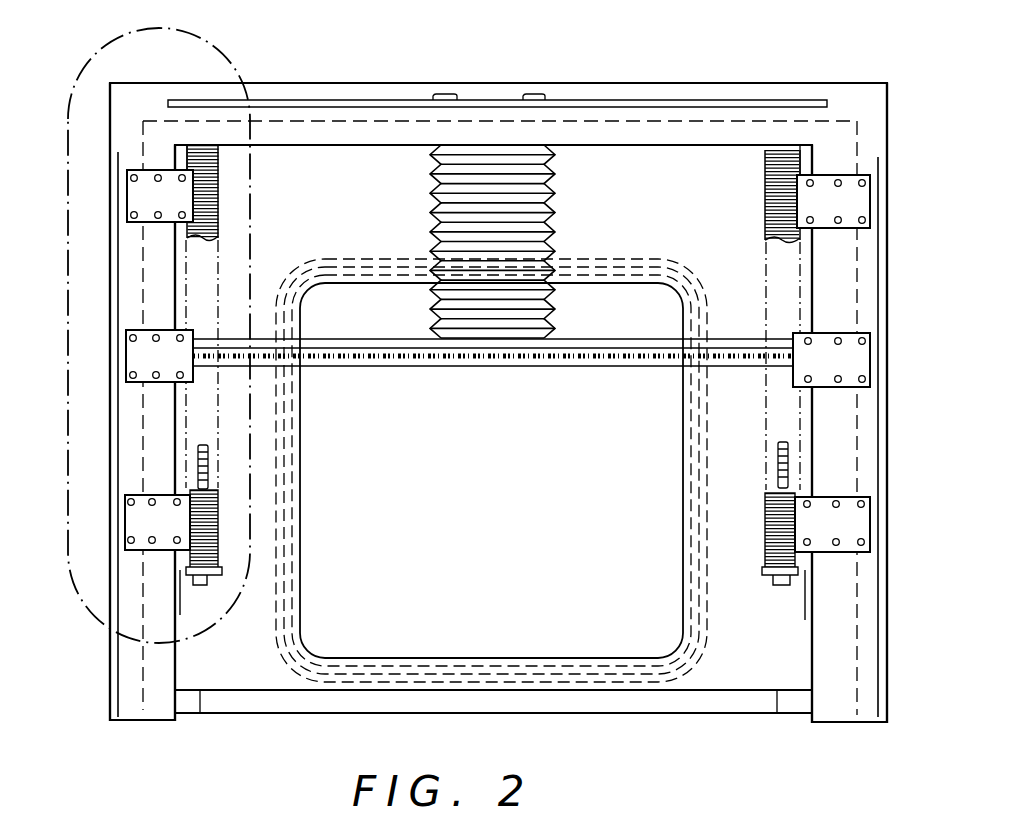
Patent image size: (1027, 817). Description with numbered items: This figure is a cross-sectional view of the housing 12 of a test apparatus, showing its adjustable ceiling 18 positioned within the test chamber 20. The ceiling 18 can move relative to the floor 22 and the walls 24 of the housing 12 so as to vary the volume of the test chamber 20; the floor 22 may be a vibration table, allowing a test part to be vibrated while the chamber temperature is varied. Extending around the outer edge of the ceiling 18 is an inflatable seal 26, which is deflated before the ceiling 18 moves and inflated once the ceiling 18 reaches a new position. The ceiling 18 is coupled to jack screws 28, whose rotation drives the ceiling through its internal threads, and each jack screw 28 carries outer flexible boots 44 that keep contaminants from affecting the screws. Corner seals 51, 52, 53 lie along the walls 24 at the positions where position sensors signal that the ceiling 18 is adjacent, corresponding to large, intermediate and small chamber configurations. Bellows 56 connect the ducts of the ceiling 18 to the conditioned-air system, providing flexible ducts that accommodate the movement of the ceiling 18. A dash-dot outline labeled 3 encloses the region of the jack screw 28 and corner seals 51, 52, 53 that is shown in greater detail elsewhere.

The housing 12 is at (740, 68).
The detail area of FIG. 3 is at (159, 330).
The adjustable ceiling 18 is at (655, 336).
The test chamber 20 is at (491, 470).
The floor 22 is at (714, 684).
The walls 24 is at (176, 679).
The inflatable seal 26 is at (522, 356).
The jack screws 28 is at (212, 466).
The flexible boots 44 is at (213, 216).
The corner seal 51 is at (138, 197).
The corner seal 52 is at (135, 360).
The corner seal 53 is at (135, 525).
The bellows 56 is at (545, 223).